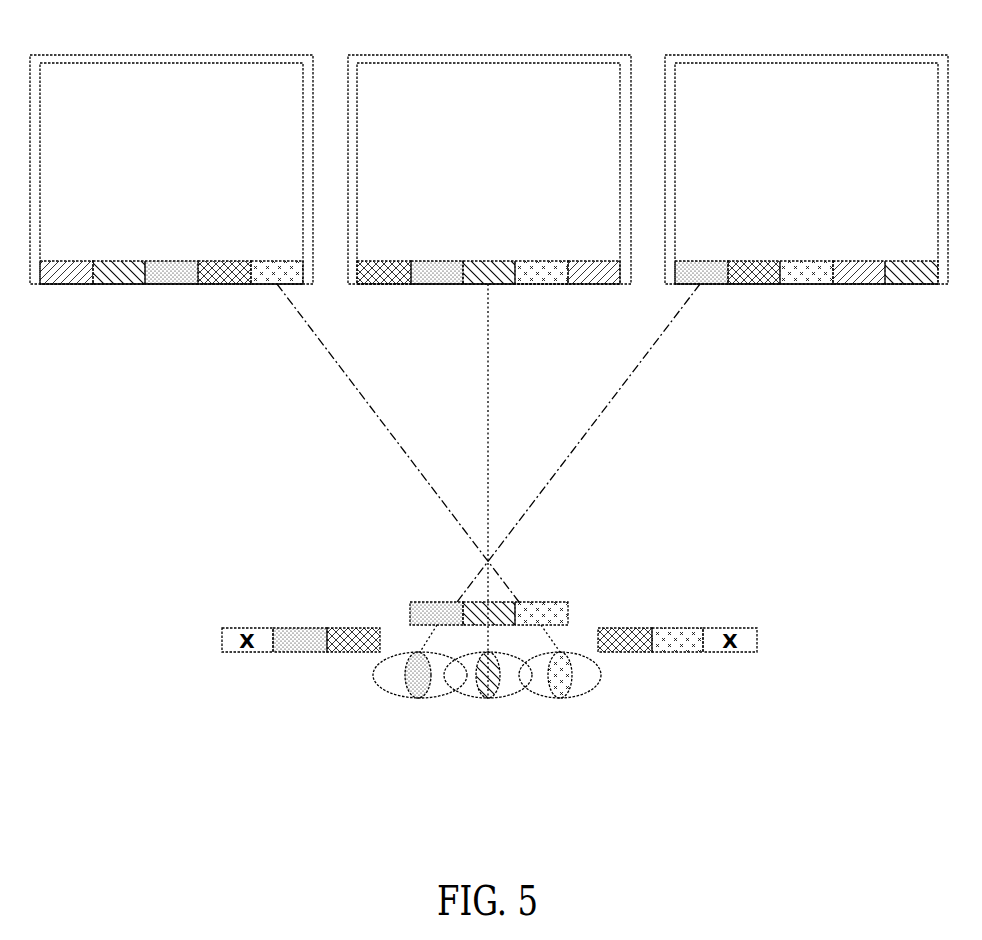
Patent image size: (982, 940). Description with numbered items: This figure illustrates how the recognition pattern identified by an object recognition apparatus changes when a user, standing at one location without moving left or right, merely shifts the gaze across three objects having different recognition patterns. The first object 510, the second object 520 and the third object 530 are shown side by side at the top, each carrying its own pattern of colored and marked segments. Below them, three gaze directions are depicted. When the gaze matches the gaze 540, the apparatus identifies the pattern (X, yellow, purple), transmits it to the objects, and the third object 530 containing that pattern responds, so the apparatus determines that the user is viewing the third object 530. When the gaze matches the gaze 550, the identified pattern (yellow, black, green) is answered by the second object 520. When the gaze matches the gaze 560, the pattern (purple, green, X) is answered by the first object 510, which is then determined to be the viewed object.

The first object 510 is at (173, 53).
The second object 520 is at (490, 53).
The third object 530 is at (807, 53).
The gaze 540 is at (418, 698).
The gaze 550 is at (488, 698).
The gaze 560 is at (558, 698).